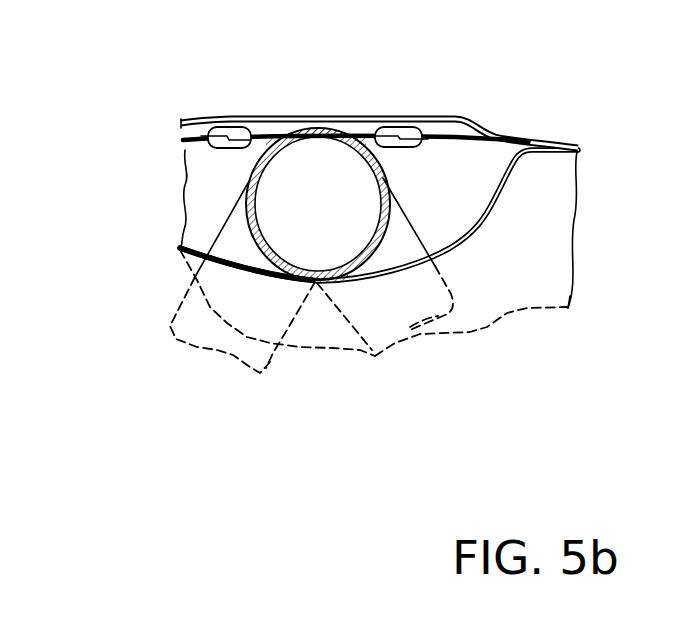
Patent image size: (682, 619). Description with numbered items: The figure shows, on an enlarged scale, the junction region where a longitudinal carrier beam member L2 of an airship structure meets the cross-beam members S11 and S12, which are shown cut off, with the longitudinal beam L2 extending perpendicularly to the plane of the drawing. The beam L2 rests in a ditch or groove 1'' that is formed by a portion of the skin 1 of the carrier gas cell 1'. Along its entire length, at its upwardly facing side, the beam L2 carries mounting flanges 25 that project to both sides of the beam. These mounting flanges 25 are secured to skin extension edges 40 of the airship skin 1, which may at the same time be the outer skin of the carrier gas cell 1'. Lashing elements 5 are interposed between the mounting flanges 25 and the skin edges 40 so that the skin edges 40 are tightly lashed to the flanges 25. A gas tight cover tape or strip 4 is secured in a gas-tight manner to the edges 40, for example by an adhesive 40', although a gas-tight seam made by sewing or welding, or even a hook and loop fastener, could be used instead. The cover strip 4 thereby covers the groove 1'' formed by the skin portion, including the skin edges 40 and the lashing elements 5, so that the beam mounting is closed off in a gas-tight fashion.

The skin 1 is at (378, 229).
The carrier gas cell 1' is at (596, 282).
The ditch or groove 1'' is at (379, 219).
The gas tight cover tape or strip 4 is at (287, 117).
The lashing elements 5 is at (230, 133).
The mounting flanges 25 is at (347, 130).
The skin extension edges 40 is at (274, 107).
The adhesive 40' is at (549, 117).
The longitudinal carrier beam member L2 is at (270, 217).
The cross-beam member S11 is at (203, 320).
The cross-beam member S12 is at (390, 353).